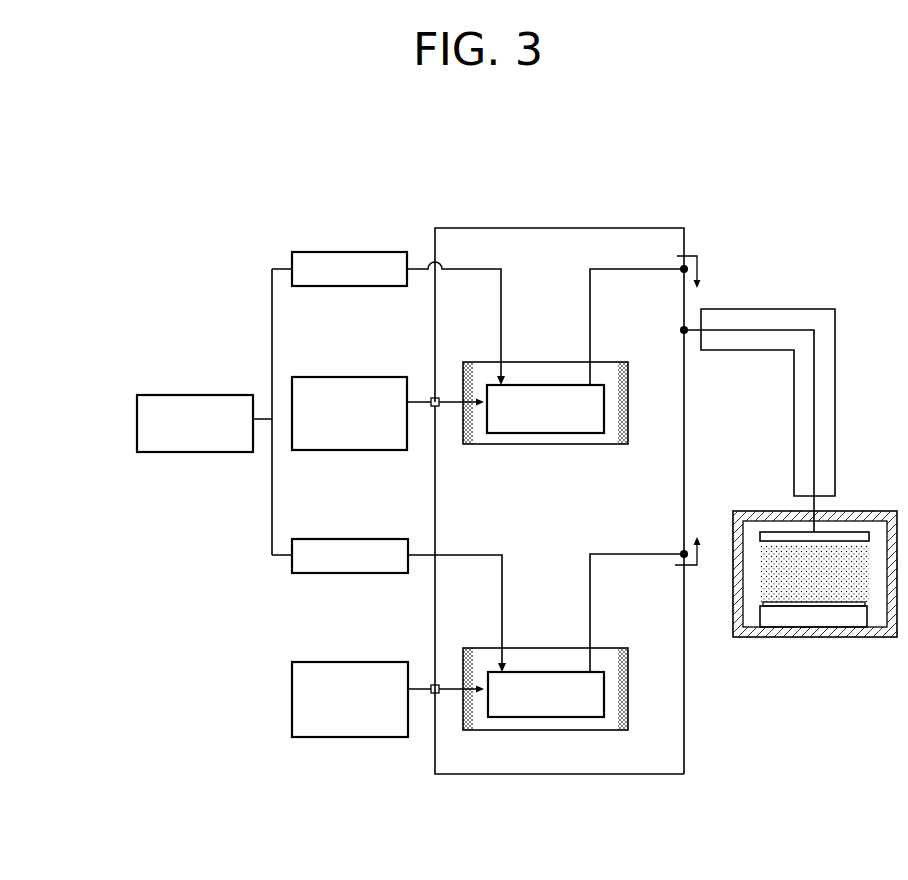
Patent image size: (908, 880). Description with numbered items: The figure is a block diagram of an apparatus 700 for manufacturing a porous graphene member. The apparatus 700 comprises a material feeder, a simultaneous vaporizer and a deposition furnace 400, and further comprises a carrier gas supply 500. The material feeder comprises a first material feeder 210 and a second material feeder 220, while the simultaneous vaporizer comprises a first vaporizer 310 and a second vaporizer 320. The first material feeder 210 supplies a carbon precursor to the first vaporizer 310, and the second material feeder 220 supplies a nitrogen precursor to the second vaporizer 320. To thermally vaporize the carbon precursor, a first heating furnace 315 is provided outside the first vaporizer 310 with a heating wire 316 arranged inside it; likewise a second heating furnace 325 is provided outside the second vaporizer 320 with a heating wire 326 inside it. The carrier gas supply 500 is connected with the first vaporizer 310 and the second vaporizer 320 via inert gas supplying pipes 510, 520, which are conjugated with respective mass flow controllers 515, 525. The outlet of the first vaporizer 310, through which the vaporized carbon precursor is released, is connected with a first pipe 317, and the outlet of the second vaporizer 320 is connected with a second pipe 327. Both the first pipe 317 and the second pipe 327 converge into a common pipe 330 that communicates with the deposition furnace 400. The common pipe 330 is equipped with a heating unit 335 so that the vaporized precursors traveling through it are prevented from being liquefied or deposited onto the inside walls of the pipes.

The apparatus for manufacturing a porous graphene member 700 is at (748, 166).
The carrier gas supply 500 is at (193, 389).
The mass flow controller 515 is at (355, 251).
The mass flow controller 525 is at (352, 538).
The inert gas supplying pipe 510 is at (468, 268).
The inert gas supplying pipe 520 is at (455, 553).
The first material feeder 210 is at (367, 370).
The second material feeder 220 is at (367, 654).
The first vaporizer 310 is at (540, 445).
The second vaporizer 320 is at (552, 670).
The heating wire 316 is at (612, 445).
The heating wire 326 is at (617, 717).
The first pipe 317 is at (650, 270).
The second pipe 327 is at (640, 557).
The first heating furnace 315 is at (652, 413).
The second heating furnace 325 is at (455, 726).
The common pipe 330 is at (753, 329).
The heating unit 335 is at (836, 400).
The deposition furnace 400 is at (803, 648).